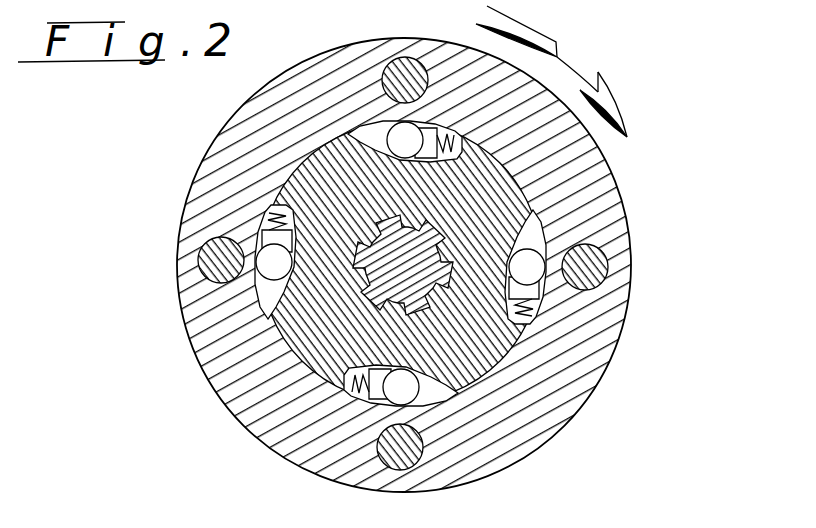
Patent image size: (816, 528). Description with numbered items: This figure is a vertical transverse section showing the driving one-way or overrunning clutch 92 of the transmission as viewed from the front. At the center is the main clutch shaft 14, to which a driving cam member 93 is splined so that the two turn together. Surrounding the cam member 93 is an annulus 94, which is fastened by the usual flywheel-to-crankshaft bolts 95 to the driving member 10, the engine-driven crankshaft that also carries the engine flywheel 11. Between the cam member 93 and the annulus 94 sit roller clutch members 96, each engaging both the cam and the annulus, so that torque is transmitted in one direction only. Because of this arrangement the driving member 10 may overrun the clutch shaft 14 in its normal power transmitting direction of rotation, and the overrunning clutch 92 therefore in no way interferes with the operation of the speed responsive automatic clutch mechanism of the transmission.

The driving member 10 is at (212, 172).
The engine flywheel 11 is at (405, 248).
The main clutch shaft 14 is at (452, 214).
The overrunning clutch 92 is at (597, 147).
The driving cam member 93 is at (539, 236).
The annulus 94 is at (337, 48).
The flywheel-to-crankshaft bolts 95 is at (407, 68).
The roller clutch members 96 is at (390, 137).